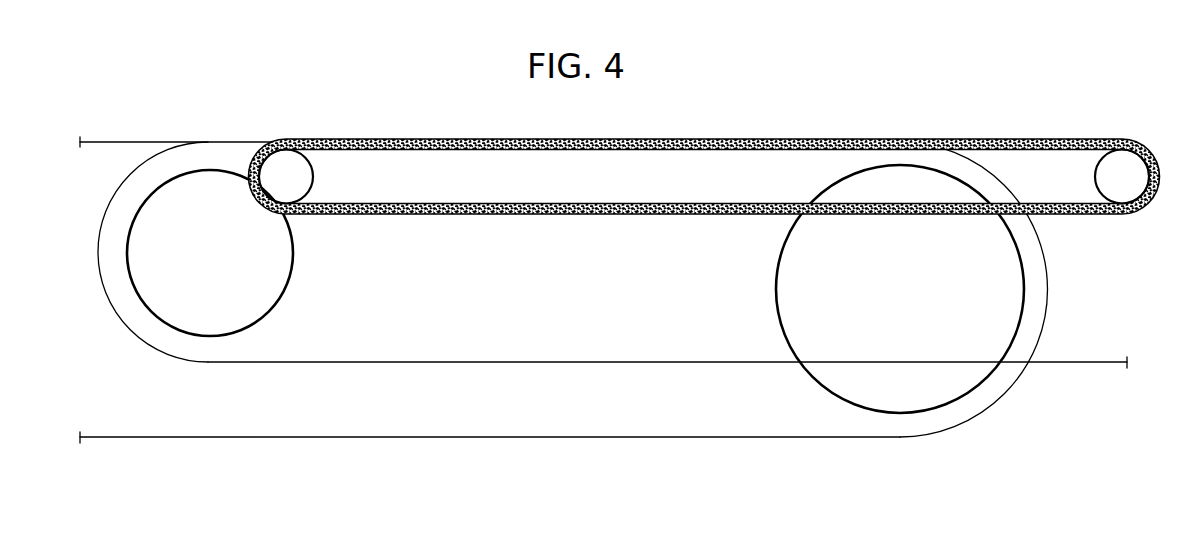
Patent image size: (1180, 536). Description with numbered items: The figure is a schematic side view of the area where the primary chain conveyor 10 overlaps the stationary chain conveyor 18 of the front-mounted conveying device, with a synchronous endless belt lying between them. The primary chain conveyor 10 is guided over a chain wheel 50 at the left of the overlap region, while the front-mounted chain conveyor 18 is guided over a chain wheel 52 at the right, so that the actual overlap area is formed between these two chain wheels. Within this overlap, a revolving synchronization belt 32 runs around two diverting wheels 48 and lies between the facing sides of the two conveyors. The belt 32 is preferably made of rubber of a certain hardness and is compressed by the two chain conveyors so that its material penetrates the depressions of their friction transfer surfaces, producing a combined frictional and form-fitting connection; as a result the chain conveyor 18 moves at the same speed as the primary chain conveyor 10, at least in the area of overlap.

The primary chain conveyor 10 is at (1086, 363).
The stationary chain conveyor 18 is at (384, 439).
The synchronization belt 32 is at (571, 215).
The diverting wheels 48 is at (306, 183).
The chain wheel 50 is at (277, 284).
The chain wheel 52 is at (791, 278).